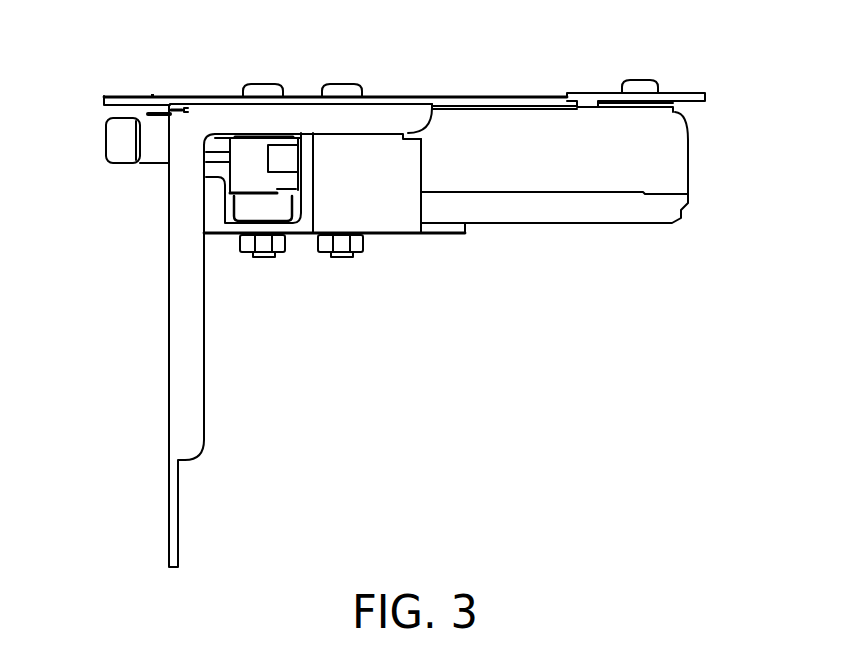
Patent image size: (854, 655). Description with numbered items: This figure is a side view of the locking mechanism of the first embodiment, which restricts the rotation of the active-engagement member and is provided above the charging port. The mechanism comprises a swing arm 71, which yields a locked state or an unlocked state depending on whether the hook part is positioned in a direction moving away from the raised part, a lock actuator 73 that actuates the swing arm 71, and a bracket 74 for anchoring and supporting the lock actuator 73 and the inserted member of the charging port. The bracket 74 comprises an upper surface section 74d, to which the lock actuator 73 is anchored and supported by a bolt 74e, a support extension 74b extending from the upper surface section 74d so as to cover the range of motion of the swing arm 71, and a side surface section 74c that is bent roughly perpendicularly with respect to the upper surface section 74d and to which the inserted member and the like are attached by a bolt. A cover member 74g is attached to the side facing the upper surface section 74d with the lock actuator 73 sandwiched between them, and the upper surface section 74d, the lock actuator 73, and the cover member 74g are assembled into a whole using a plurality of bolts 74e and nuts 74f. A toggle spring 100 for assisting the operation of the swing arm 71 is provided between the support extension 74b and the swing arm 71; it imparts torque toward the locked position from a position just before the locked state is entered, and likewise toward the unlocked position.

The swing arm 71 is at (116, 139).
The lock actuator 73 is at (704, 136).
The bracket 74 is at (412, 85).
The support extension 74b is at (123, 97).
The side surface section 74c is at (168, 374).
The upper surface section 74d is at (494, 97).
The bolt 74e is at (261, 84).
The nut 74f is at (249, 257).
The cover member 74g is at (443, 235).
The toggle spring 100 is at (167, 90).